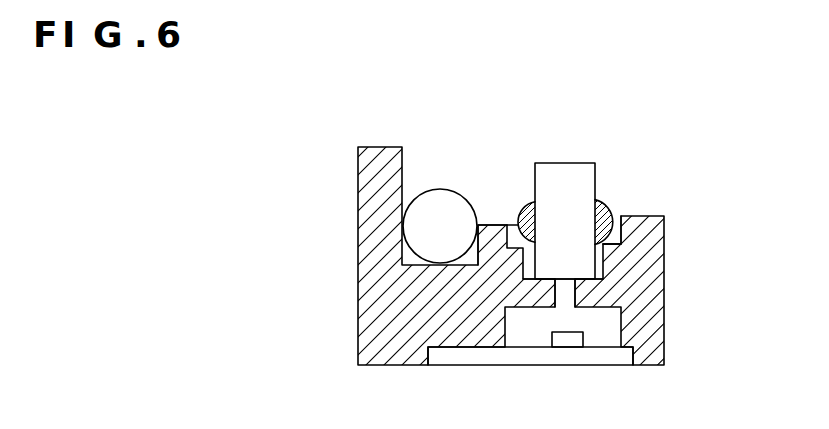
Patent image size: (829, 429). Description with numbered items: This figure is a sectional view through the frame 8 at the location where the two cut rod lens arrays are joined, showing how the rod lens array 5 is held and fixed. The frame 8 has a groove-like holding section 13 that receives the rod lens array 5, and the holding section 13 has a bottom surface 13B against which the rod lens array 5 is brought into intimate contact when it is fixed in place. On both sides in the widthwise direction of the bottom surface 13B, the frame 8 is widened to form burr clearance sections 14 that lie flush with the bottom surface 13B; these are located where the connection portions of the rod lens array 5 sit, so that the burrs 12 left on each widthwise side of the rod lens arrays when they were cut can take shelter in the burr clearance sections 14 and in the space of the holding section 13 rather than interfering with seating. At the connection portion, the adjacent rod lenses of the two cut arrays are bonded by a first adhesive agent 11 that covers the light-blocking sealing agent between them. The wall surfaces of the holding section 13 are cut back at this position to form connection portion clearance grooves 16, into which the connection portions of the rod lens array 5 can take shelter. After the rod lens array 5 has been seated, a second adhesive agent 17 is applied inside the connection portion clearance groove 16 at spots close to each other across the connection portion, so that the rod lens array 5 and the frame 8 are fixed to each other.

The rod lens array 5 is at (565, 163).
The frame 8 is at (358, 256).
The first adhesive agent 11 is at (520, 218).
The burr 12 is at (597, 279).
The holding section 13 is at (612, 250).
The bottom surface 13B is at (603, 258).
The burr clearance section 14 is at (597, 272).
The connection portion clearance groove 16 is at (526, 243).
The second adhesive agent 17 is at (472, 248).